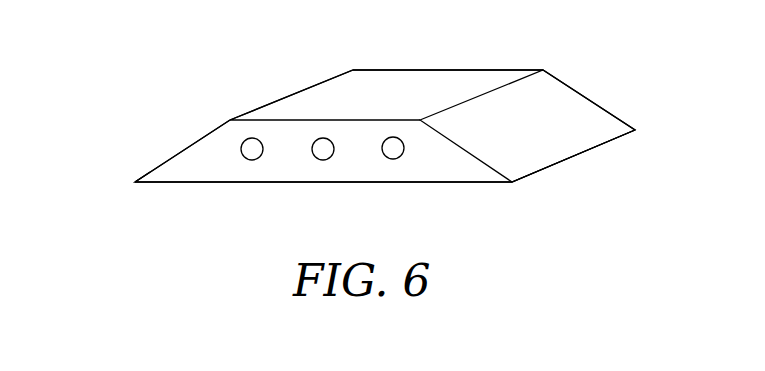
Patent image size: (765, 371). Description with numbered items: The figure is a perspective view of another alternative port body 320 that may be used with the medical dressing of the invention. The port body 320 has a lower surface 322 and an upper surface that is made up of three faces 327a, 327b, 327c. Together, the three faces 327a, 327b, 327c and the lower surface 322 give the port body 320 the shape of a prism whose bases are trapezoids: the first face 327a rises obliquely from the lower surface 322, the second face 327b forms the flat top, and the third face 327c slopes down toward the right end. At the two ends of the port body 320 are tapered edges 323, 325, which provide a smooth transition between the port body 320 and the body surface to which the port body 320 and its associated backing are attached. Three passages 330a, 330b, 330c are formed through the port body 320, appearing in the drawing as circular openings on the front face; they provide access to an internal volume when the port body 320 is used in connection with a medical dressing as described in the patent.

The port body 320 is at (287, 62).
The lower surface 322 is at (195, 185).
The tapered edge 323 is at (135, 180).
The tapered edge 325 is at (542, 170).
The face 327a is at (198, 140).
The face 327b is at (408, 78).
The face 327c is at (563, 108).
The passage 330a is at (252, 160).
The passage 330b is at (323, 160).
The passage 330c is at (393, 159).